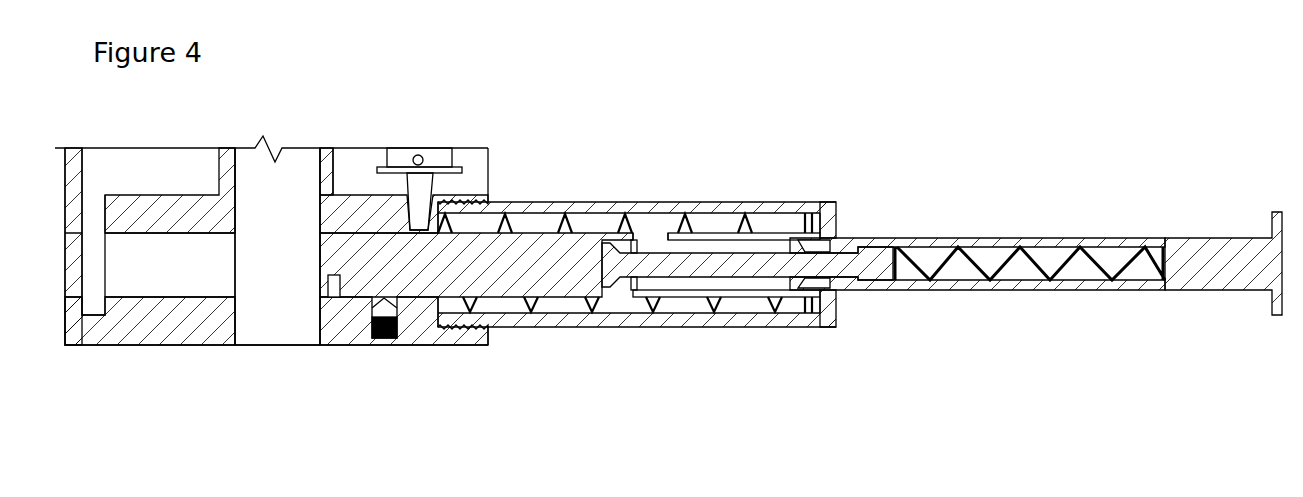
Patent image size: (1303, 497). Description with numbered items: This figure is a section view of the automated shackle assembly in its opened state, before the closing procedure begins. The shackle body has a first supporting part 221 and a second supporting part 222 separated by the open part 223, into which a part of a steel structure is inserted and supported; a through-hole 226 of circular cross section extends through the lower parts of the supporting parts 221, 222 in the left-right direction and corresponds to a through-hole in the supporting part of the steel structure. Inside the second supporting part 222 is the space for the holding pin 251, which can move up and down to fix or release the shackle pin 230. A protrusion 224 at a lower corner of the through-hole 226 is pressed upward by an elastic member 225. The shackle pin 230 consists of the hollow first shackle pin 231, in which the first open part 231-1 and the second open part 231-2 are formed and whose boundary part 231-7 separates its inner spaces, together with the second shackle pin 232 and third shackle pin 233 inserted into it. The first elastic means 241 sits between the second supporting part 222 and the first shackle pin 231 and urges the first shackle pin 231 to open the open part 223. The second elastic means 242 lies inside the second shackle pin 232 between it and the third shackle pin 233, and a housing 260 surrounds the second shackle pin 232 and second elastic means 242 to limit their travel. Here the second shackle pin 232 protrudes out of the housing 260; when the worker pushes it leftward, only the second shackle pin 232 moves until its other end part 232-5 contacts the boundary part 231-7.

The first supporting part 221 is at (132, 322).
The through-hole 226 is at (192, 280).
The open part 223 is at (275, 323).
The second supporting part 222 is at (338, 328).
The holding pin 251 is at (435, 160).
The elastic member 225 is at (383, 337).
The protrusion 224 is at (393, 312).
The first shackle pin 231 is at (500, 287).
The first open part 231-1 is at (651, 233).
The second open part 231-2 is at (618, 292).
The boundary part 231-7 is at (655, 290).
The first elastic means 241 is at (563, 228).
The housing 260 is at (768, 198).
The third shackle pin 233 is at (879, 268).
The second shackle pin 232 is at (1182, 238).
The other end part of the second shackle pin 232-5 is at (786, 248).
The second elastic means 242 is at (1050, 283).
The shackle pin 230 is at (1212, 223).